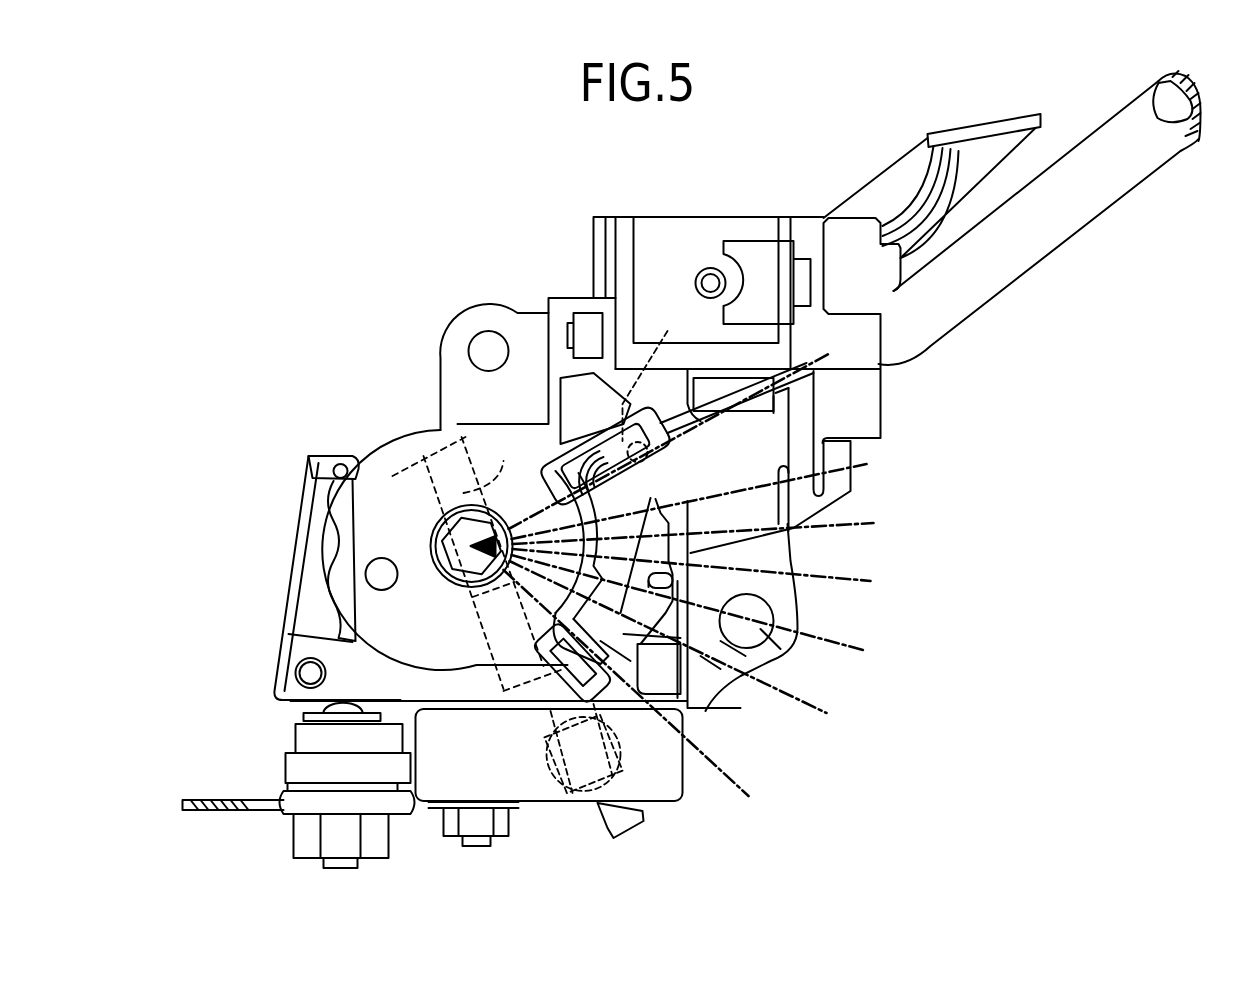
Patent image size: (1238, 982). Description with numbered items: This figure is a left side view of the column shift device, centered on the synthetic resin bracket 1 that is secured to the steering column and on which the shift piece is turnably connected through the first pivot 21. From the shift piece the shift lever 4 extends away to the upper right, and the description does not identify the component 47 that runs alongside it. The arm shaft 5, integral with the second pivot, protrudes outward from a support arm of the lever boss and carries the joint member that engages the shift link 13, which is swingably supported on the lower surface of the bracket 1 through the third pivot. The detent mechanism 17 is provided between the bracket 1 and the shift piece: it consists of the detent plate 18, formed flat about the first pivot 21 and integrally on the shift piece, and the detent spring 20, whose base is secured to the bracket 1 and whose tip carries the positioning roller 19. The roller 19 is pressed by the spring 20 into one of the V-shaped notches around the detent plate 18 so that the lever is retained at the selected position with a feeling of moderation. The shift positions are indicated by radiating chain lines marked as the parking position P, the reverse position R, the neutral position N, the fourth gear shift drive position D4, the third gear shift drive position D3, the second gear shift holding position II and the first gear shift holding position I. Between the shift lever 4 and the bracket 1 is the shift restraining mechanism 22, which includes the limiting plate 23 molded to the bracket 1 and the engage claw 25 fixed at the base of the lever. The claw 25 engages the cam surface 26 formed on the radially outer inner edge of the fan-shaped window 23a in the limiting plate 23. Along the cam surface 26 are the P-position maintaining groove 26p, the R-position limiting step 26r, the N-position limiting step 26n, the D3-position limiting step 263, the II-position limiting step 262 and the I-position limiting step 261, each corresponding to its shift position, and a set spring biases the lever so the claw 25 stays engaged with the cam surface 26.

The bracket 1 is at (448, 333).
The shift lever 4 is at (1050, 215).
The arm shaft 5 is at (605, 840).
The shift link 13 is at (532, 782).
The detent mechanism 17 is at (318, 460).
The detent plate 18 is at (335, 498).
The positioning roller 19 is at (345, 463).
The detent spring 20 is at (303, 527).
The first pivot 21 is at (460, 523).
The shift restraining mechanism 22 is at (820, 550).
The limiting plate 23 is at (667, 642).
The window 23a is at (705, 660).
The engage claw 25 is at (622, 473).
The cam surface 26 is at (755, 598).
The P-position maintaining groove 26p is at (663, 369).
The R-position limiting step 26r is at (683, 453).
The N-position limiting step 26n is at (685, 512).
The I-position limiting step 261 is at (612, 655).
The II-position limiting step 262 is at (713, 637).
The D3-position limiting step 263 is at (750, 627).
The wire harness 47 is at (995, 128).
The parking position P is at (678, 431).
The reverse position R is at (702, 492).
The neutral position N is at (707, 522).
The fourth gear shift drive position D4 is at (711, 577).
The third gear shift drive position D3 is at (709, 613).
The first gear shift holding position I is at (635, 698).
The second gear shift holding position II is at (682, 651).